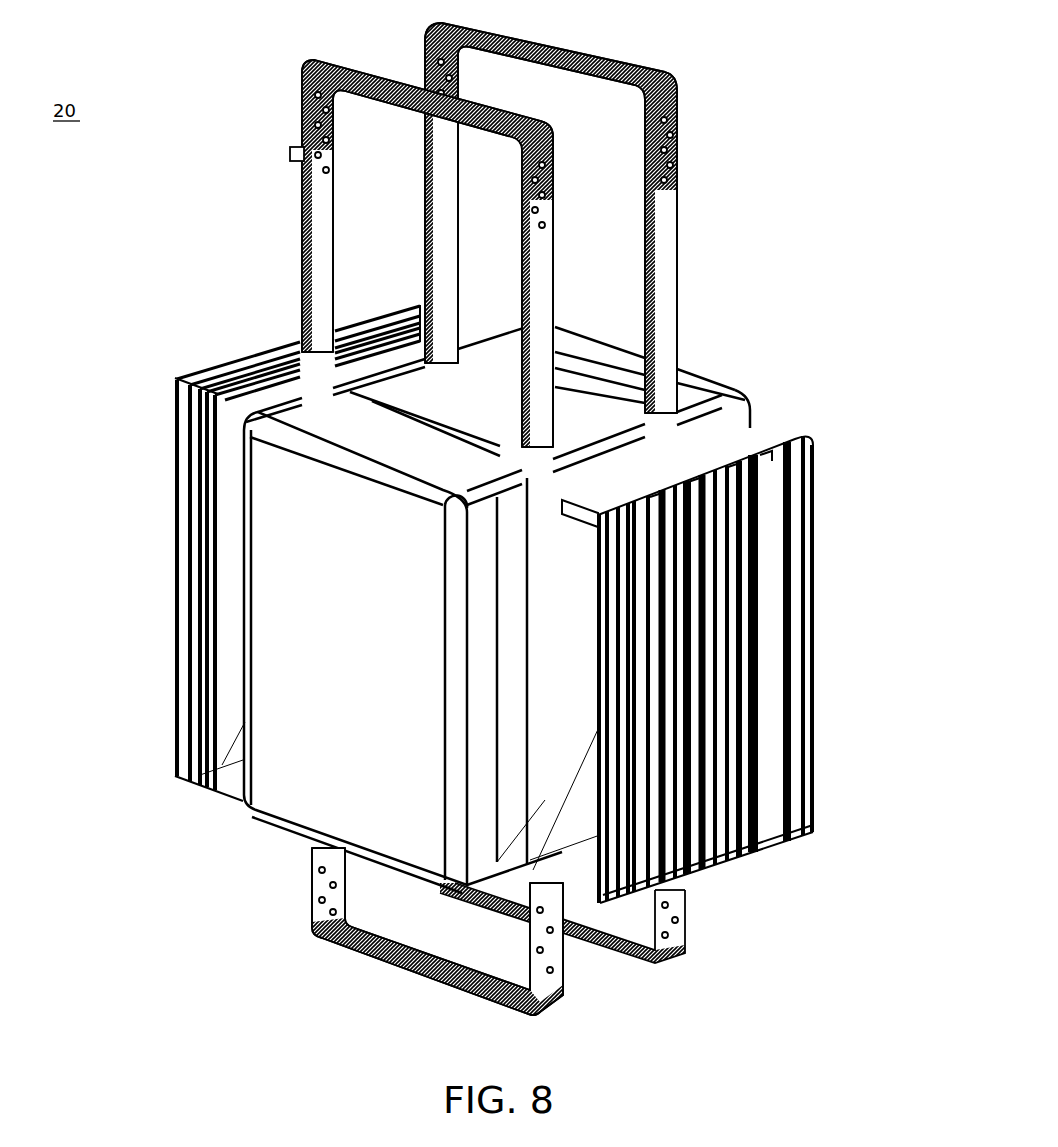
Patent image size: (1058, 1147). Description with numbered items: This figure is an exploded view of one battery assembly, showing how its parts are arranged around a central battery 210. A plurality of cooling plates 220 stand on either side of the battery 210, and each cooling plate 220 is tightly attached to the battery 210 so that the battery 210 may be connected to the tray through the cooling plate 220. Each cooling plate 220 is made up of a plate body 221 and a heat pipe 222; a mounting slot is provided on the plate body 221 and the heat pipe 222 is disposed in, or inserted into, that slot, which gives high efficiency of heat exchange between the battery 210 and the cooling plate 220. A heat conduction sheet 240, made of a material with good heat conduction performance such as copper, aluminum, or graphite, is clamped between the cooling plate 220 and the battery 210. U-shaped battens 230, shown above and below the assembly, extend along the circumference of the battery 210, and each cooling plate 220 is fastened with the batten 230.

The battery 210 is at (300, 742).
The cooling plate 220 is at (200, 368).
The plate body 221 is at (730, 672).
The heat pipe 222 is at (700, 728).
The batten 230 is at (318, 220).
The heat conduction sheet 240 is at (232, 640).